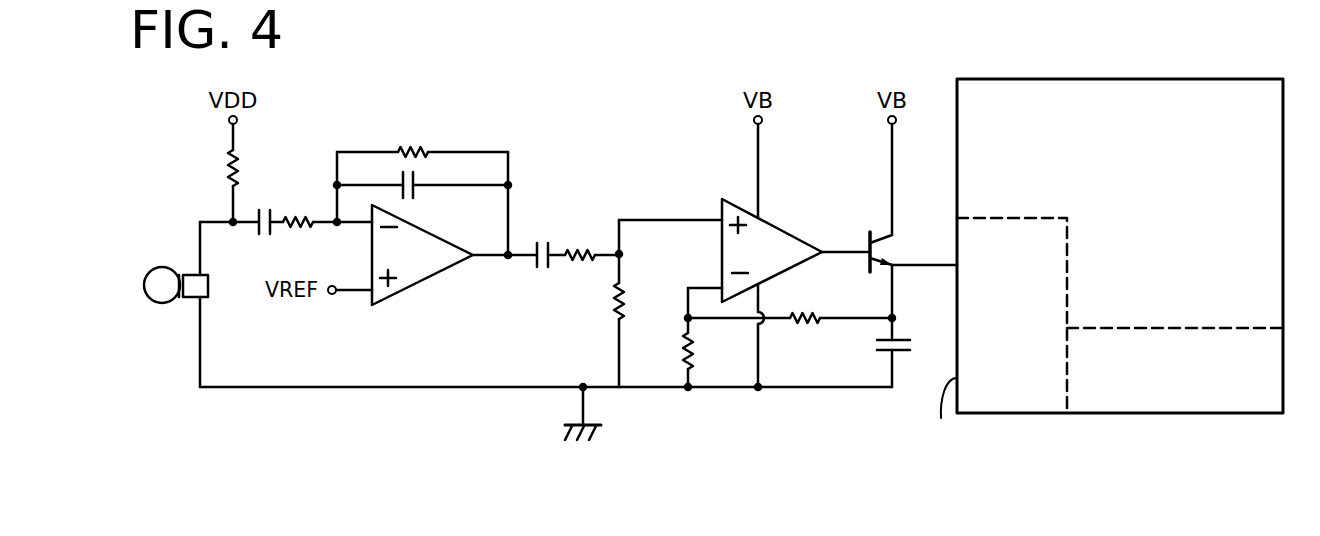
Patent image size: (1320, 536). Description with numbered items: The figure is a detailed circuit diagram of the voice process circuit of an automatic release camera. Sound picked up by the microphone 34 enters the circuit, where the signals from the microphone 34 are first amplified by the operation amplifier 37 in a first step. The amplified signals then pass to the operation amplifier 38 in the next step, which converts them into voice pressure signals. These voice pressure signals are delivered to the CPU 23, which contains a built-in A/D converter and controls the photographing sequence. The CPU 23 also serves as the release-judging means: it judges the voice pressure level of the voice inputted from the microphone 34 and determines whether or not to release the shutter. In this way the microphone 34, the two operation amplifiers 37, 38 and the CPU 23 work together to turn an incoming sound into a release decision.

The microphone 34 is at (143, 285).
The operation amplifier 37 is at (431, 277).
The operation amplifier 38 is at (773, 223).
The CPU 23 is at (1153, 79).